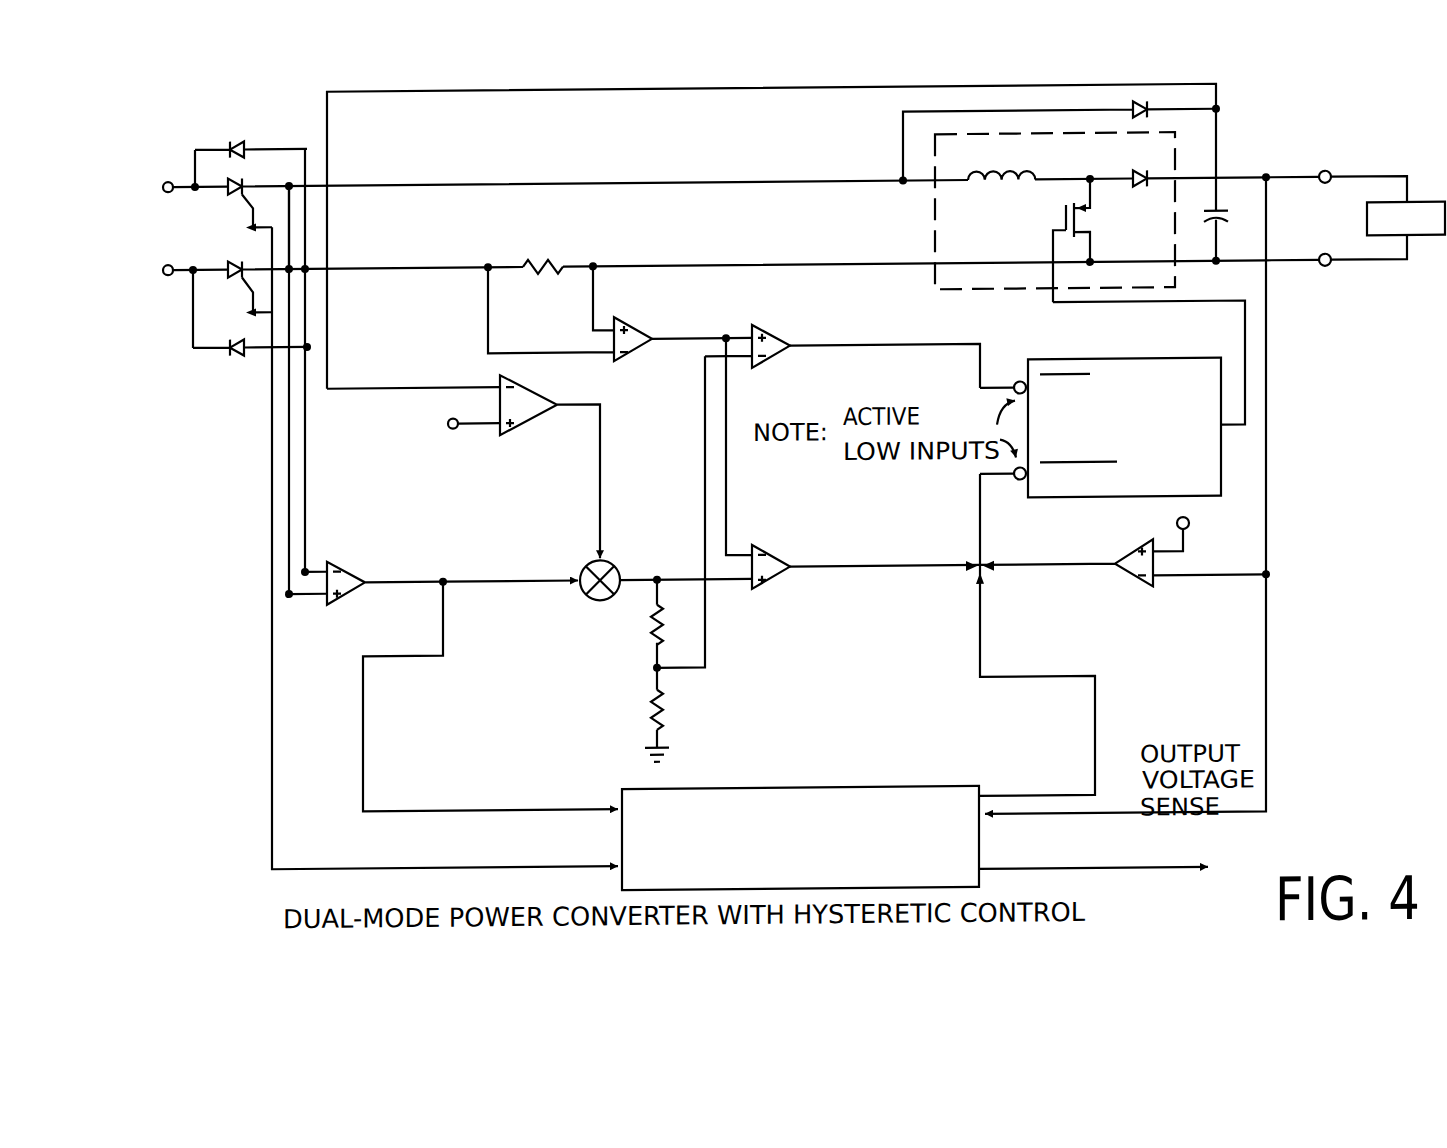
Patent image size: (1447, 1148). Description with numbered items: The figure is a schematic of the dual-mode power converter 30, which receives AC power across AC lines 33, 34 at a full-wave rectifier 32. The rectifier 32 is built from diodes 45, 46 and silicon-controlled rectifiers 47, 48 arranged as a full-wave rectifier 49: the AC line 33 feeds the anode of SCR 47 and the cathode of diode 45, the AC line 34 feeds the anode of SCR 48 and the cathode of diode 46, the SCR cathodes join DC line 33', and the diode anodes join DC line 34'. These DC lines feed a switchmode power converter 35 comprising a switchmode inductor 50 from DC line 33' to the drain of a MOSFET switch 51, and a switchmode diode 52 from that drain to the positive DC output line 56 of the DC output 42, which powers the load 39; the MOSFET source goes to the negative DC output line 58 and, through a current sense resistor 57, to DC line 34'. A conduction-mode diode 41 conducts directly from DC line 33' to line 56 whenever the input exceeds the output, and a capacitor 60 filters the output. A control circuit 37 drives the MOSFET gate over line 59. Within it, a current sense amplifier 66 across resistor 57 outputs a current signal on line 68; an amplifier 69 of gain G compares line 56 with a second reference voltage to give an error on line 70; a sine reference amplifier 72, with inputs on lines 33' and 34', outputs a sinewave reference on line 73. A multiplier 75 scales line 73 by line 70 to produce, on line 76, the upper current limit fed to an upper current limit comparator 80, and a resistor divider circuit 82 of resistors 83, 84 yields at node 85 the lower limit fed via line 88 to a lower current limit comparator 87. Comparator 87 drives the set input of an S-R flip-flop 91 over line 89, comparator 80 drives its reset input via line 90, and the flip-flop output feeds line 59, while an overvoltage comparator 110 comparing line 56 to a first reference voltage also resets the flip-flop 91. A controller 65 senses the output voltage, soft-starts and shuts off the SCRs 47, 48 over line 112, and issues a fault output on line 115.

The dual-mode power converter 30 is at (228, 731).
The full-wave rectifier 32 is at (176, 149).
The AC line 33 is at (168, 207).
The AC line 34 is at (168, 304).
The DC line 33' is at (754, 203).
The DC line 34' is at (754, 358).
The switchmode power converter 35 is at (935, 246).
The control circuit 37 is at (1042, 600).
The load 39 is at (1433, 212).
The conduction-mode diode 41 is at (1150, 121).
The DC output 42 is at (1308, 223).
The diode 45 is at (243, 139).
The diode 46 is at (235, 358).
The silicon-controlled rectifier 47 is at (233, 199).
The silicon-controlled rectifier 48 is at (228, 260).
The full-wave rectifier 49 is at (281, 376).
The switchmode inductor 50 is at (1000, 190).
The switchmode switch 51 is at (1064, 220).
The switchmode diode 52 is at (1137, 198).
The positive DC output line 56 is at (1233, 185).
The current sense resistor 57 is at (547, 264).
The negative DC output line 58 is at (1248, 271).
The line 59 is at (1137, 312).
The capacitor 60 is at (1203, 230).
The controller 65 is at (789, 792).
The current sense operational amplifier 66 is at (633, 364).
The line 68 is at (683, 340).
The operational amplifier 69 is at (535, 423).
The line 70 is at (575, 388).
The sine reference operational amplifier 72 is at (357, 597).
The line 73 is at (453, 587).
The single quadrant analog multiplier 75 is at (607, 605).
The line 76 is at (637, 585).
The upper current limit comparator 80 is at (772, 582).
The resistor divider circuit 82 is at (702, 685).
The resistor 83 is at (650, 704).
The resistor 84 is at (652, 626).
The node 85 is at (660, 671).
The lower current limit comparator 87 is at (773, 364).
The line 88 is at (703, 487).
The set line 89 is at (866, 351).
The line 90 is at (876, 572).
The S-R flip-flop 91 is at (1155, 366).
The overvoltage comparator 110 is at (1152, 596).
The line 112 is at (271, 668).
The line 115 is at (1185, 876).